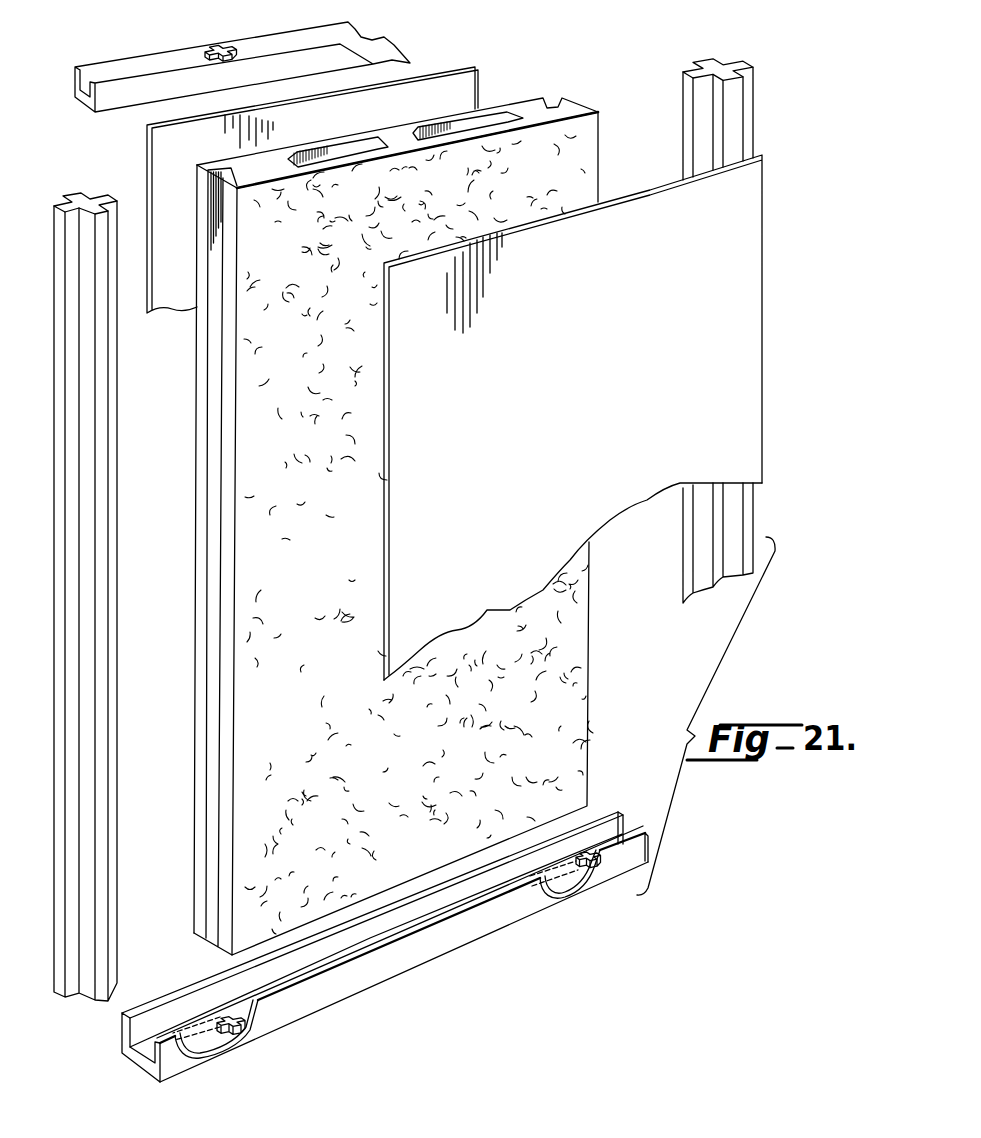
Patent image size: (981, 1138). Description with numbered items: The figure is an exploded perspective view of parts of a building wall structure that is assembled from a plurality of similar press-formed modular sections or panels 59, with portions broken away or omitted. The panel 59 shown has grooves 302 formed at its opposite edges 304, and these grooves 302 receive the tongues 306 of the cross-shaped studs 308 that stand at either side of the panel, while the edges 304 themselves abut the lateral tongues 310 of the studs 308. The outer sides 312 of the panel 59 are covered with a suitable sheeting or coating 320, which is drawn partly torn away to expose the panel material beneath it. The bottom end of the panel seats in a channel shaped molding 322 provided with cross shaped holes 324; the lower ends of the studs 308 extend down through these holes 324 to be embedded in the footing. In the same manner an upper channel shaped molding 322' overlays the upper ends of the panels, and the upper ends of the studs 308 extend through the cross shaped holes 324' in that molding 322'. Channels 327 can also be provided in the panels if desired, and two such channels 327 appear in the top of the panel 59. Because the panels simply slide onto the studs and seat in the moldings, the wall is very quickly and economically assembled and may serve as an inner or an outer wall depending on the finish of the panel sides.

The modular section or panel 59 is at (603, 157).
The groove 302 is at (217, 505).
The edge 304 is at (198, 598).
The tongue 306 is at (87, 200).
The stud 308 is at (728, 70).
The lateral tongue 310 is at (738, 110).
The outer side 312 is at (583, 147).
The sheeting or coating 320 is at (733, 263).
The channel shaped molding 322 is at (385, 947).
The upper channel shaped molding 322' is at (270, 67).
The cross shaped hole 324 is at (387, 964).
The cross shaped hole 324' is at (197, 36).
The channel 327 is at (485, 122).